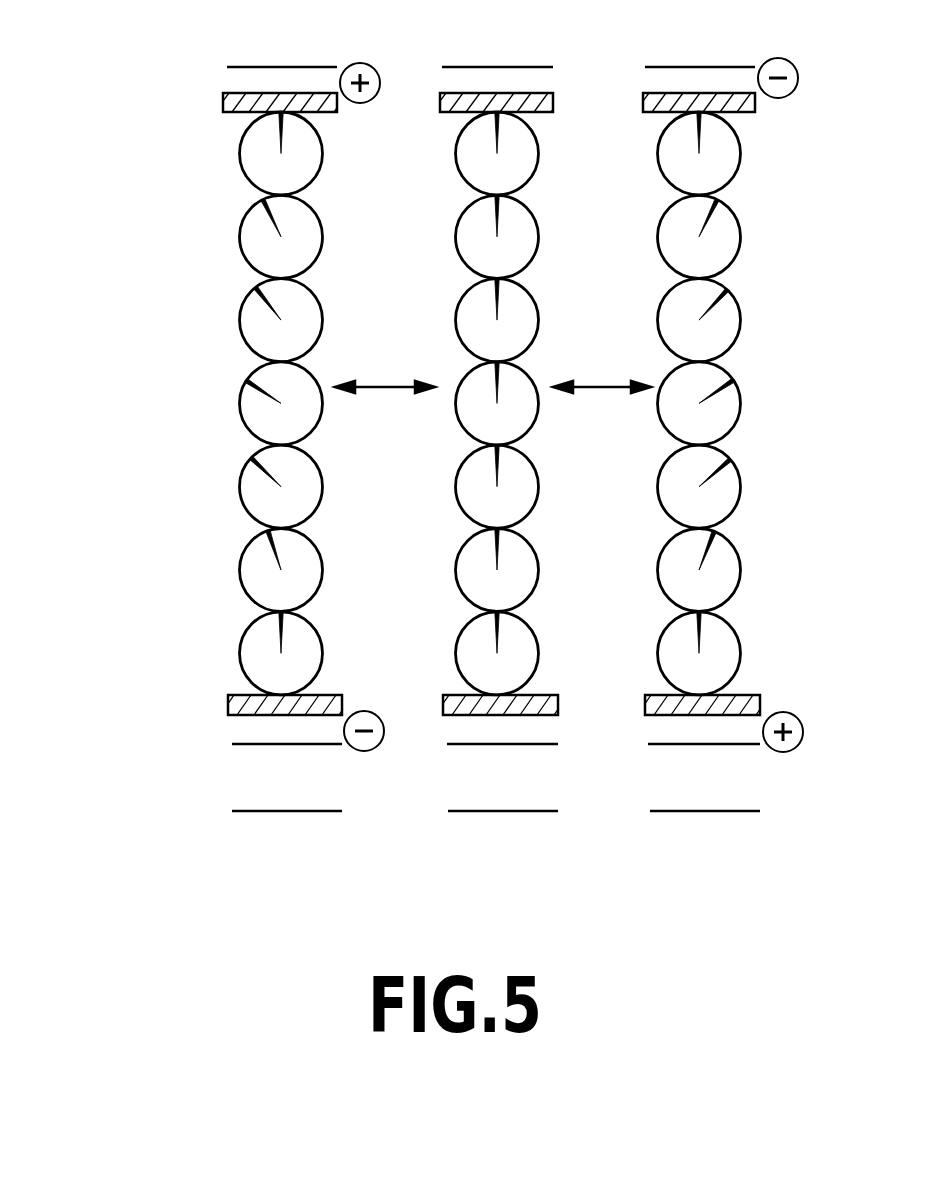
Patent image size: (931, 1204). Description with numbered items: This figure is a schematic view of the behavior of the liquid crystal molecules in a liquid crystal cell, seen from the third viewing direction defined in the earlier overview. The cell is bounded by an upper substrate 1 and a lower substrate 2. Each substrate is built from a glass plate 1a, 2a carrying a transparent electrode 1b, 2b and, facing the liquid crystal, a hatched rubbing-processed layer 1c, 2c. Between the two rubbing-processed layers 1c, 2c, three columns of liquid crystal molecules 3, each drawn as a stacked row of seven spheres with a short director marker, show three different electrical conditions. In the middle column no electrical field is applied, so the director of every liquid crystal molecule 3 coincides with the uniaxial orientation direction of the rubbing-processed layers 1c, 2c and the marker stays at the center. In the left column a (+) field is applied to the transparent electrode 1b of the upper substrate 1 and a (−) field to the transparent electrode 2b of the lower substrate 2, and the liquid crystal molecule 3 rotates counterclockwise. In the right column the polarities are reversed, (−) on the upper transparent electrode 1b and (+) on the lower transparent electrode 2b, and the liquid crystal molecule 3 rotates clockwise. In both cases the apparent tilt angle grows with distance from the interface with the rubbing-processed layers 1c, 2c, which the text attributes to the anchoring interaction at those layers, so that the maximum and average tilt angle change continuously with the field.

The upper substrate 1 is at (123, 5).
The glass plate 1a is at (237, 32).
The transparent electrode 1b is at (237, 78).
The rubbing-processed layer 1c is at (227, 100).
The lower substrate 2 is at (128, 677).
The glass plate 2a is at (242, 780).
The transparent electrode 2b is at (242, 730).
The rubbing-processed layer 2c is at (230, 700).
The liquid crystal molecule 3 is at (281, 132).